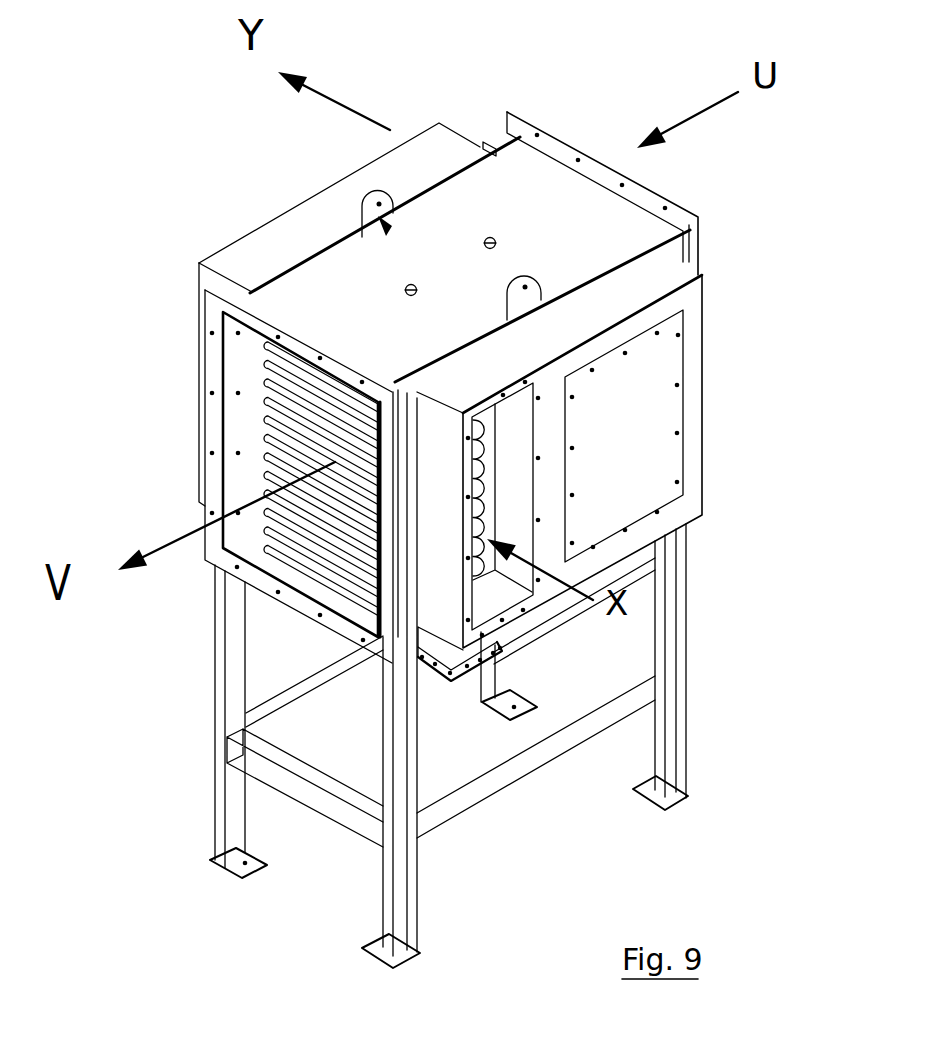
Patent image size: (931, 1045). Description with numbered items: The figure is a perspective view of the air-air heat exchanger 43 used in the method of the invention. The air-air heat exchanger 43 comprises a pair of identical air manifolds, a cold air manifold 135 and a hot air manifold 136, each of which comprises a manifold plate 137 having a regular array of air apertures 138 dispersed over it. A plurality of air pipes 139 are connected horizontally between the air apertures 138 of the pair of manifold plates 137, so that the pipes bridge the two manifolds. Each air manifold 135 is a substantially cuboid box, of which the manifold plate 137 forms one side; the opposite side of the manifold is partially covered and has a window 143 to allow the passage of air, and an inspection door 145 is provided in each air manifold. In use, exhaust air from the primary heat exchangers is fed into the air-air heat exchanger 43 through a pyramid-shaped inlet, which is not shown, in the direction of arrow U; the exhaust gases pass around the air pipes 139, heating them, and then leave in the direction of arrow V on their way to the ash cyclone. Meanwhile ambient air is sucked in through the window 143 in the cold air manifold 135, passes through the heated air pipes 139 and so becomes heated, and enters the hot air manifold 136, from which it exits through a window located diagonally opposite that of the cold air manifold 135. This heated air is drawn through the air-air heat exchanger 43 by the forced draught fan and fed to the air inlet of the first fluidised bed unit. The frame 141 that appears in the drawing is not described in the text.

The air-air heat exchanger 43 is at (490, 493).
The cold air manifold 135 is at (448, 610).
The hot air manifold 136 is at (430, 148).
The manifold plate 137 is at (243, 360).
The air apertures 138 is at (477, 432).
The air pipes 139 is at (302, 432).
The front frame 141 is at (693, 361).
The window 143 is at (503, 508).
The inspection door 145 is at (637, 468).